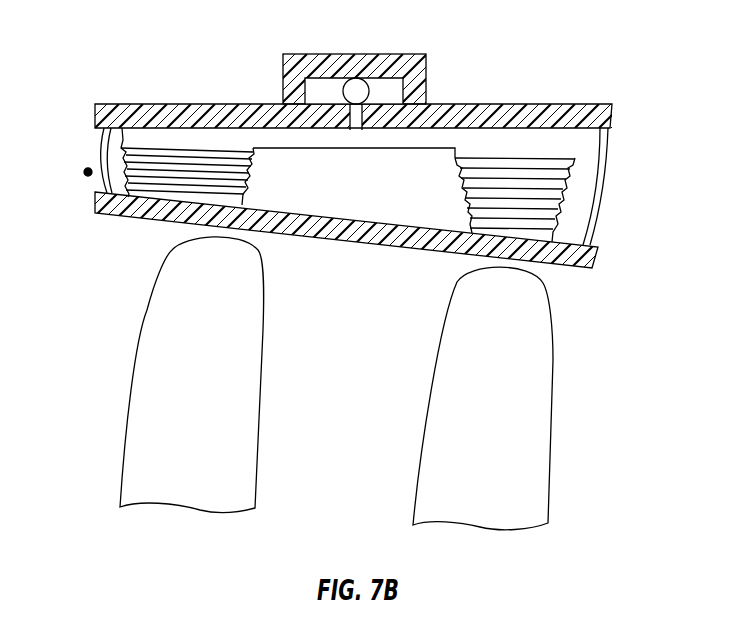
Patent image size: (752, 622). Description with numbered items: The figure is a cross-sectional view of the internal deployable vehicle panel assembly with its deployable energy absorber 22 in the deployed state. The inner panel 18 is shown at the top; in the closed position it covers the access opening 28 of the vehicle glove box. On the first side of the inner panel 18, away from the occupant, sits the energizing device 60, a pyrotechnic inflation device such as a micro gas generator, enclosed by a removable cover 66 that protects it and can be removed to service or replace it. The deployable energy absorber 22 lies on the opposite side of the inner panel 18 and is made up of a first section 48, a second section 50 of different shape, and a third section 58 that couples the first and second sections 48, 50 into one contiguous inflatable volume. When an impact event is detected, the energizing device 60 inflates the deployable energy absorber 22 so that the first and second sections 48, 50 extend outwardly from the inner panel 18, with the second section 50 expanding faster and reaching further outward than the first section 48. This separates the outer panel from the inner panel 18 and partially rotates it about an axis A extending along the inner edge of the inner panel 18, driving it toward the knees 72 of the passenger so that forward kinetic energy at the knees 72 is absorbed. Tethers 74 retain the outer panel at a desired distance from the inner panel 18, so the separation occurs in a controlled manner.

The inner panel 18 is at (613, 116).
The access opening 28 is at (594, 258).
The removable cover 66 is at (427, 77).
The energizing device 60 is at (350, 84).
The third section 58 is at (375, 138).
The deployable energy absorber 22 is at (392, 183).
The first section 48 is at (227, 135).
The second section 50 is at (537, 152).
The tethers 74 is at (101, 183).
The axis A is at (86, 168).
The knees 72 is at (168, 256).